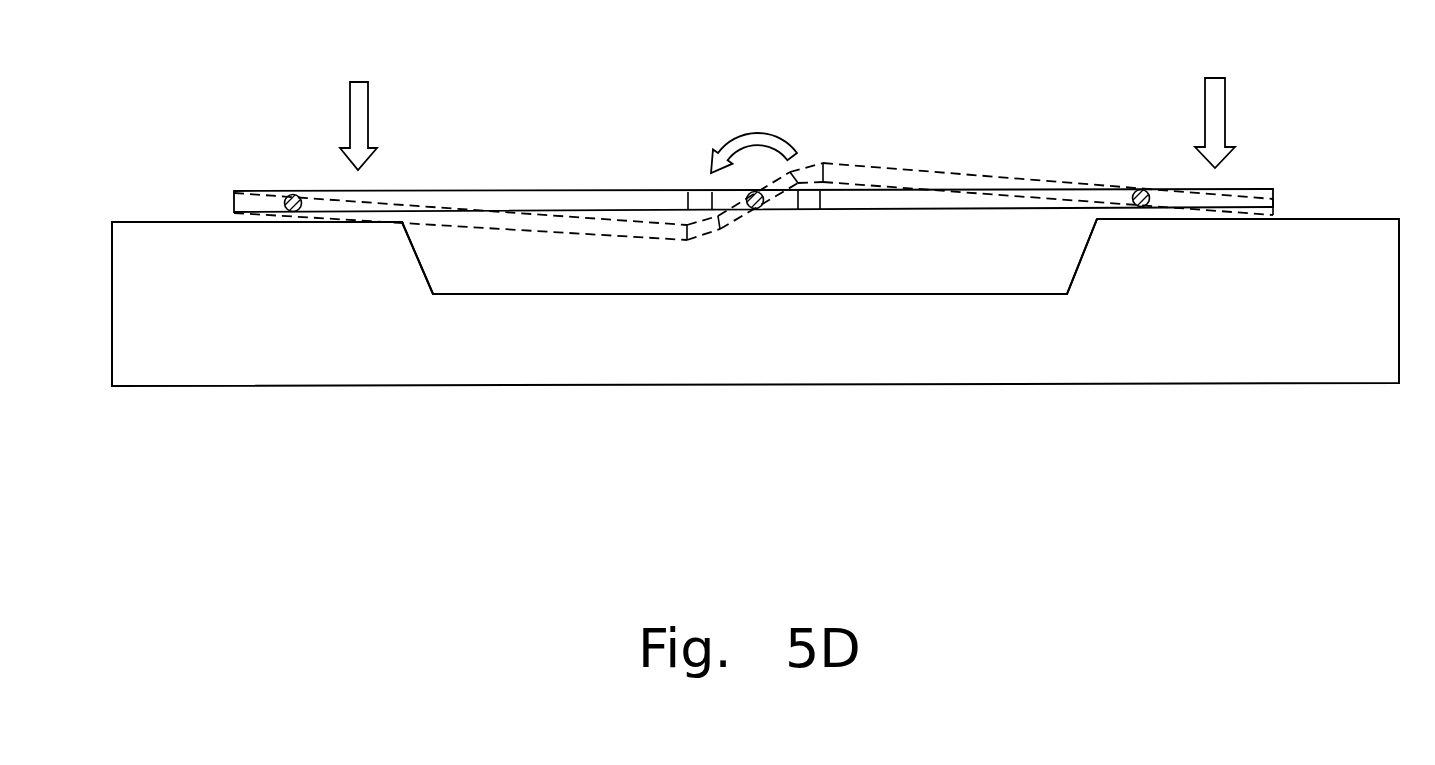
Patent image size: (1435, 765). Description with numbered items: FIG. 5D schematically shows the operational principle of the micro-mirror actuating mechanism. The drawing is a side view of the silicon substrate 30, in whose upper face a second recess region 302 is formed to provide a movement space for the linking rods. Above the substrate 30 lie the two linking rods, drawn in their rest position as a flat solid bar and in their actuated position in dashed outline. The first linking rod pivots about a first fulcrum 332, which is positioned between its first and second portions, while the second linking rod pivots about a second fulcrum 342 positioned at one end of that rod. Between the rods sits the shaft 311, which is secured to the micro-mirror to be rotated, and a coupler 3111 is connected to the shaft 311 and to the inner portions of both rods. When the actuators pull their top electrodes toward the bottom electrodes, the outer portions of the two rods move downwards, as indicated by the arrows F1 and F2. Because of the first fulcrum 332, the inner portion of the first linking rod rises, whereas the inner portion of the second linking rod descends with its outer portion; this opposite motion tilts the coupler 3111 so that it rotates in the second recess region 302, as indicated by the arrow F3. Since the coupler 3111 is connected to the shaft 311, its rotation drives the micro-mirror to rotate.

The silicon substrate 30 is at (1322, 243).
The second recess region 302 is at (968, 258).
The shaft 311 is at (751, 195).
The coupler 3111 is at (783, 190).
The first fulcrum 332 is at (1140, 190).
The second fulcrum 342 is at (288, 196).
The arrow F1 is at (1215, 102).
The arrow F2 is at (358, 105).
The arrow F3 is at (754, 132).